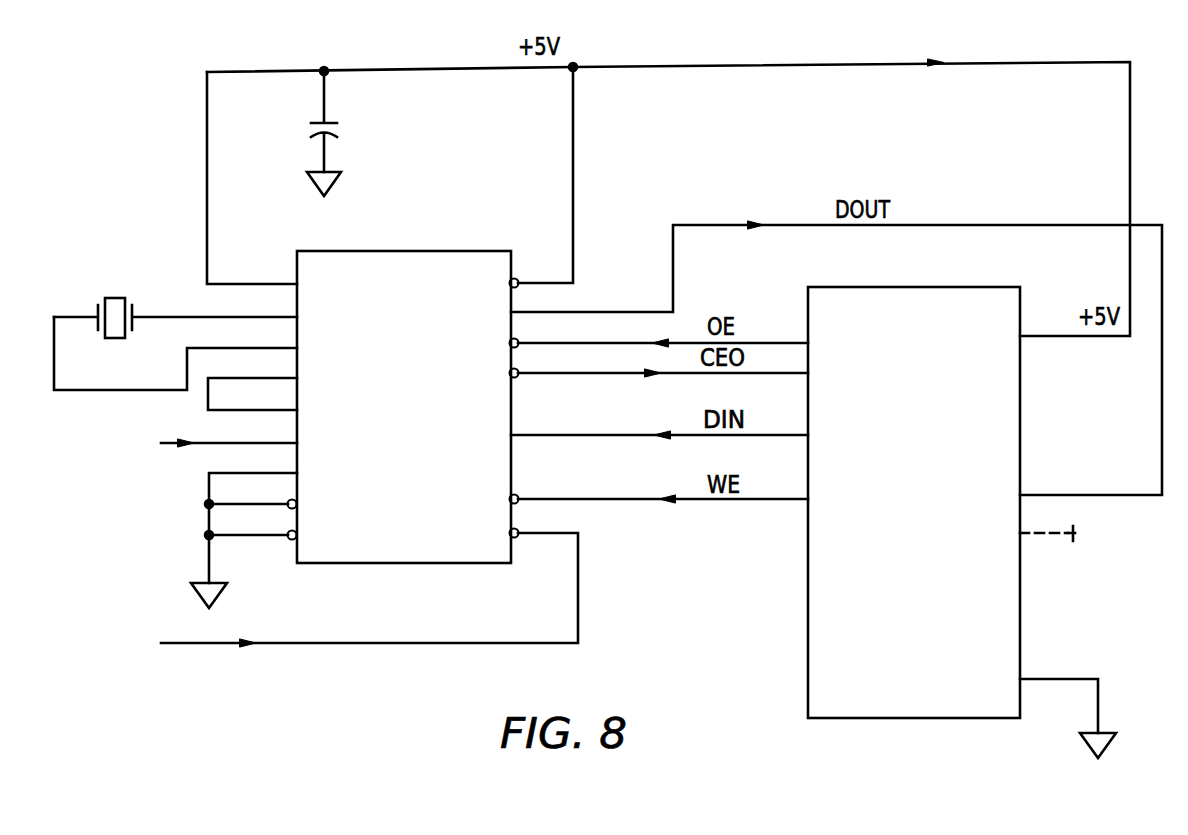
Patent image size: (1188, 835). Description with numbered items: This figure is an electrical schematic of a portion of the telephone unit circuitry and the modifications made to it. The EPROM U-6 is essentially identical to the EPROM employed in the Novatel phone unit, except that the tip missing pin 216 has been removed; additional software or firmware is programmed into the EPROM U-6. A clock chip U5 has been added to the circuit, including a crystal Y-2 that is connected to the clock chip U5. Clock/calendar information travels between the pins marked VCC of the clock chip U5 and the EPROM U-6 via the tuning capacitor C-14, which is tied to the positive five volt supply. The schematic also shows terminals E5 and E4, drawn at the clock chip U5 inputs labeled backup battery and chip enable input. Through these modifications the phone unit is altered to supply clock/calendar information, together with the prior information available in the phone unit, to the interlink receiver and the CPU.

The tip missing pin 216 is at (1053, 536).
The clock chip U5 is at (404, 392).
The EPROM U-6 is at (914, 487).
The tuning capacitor C-14 is at (358, 133).
The crystal Y-2 is at (175, 326).
The chip enable input (CEI) E4 is at (339, 671).
The backup battery E5 is at (182, 479).